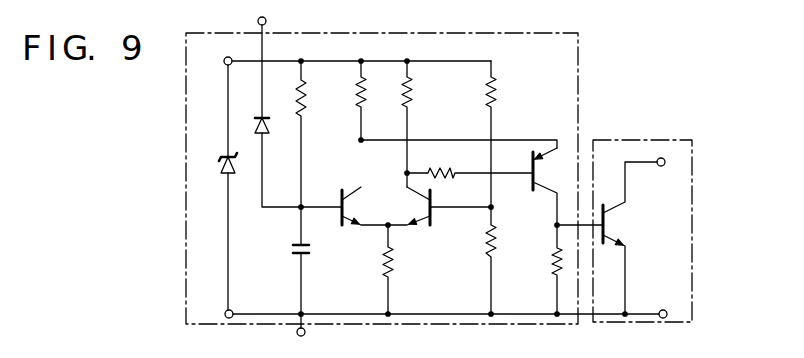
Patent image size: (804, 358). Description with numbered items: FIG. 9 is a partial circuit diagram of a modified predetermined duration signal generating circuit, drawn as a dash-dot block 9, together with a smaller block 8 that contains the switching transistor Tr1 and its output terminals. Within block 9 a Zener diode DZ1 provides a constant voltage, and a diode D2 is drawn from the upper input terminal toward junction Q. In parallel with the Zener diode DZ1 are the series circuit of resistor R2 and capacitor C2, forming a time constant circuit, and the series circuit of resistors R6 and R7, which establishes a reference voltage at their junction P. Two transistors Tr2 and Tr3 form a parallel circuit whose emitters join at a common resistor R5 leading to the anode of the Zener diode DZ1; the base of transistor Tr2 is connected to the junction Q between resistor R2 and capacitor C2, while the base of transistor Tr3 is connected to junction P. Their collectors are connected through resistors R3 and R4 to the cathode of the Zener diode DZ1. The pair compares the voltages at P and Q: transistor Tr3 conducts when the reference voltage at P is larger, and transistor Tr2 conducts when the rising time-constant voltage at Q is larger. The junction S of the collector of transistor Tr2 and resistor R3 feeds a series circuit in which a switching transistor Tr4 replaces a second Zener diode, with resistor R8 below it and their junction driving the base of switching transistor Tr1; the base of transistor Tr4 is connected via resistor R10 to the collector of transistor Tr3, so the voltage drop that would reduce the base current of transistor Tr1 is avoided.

The control circuit block 9 is at (578, 62).
The output transistor block 8 is at (636, 140).
The diode D2 is at (256, 127).
The Zener diode DZ1 is at (219, 166).
The resistor R2 is at (308, 96).
The resistor R3 is at (367, 96).
The resistor R4 is at (414, 96).
The common resistor R5 is at (396, 265).
The resistor R6 is at (498, 96).
The resistor R7 is at (500, 241).
The resistor R8 is at (551, 263).
The resistor R10 is at (440, 177).
The capacitor C2 is at (284, 253).
The switching transistor Tr1 is at (614, 225).
The transistor Tr2 is at (346, 212).
The transistor Tr3 is at (428, 212).
The switching transistor Tr4 is at (538, 174).
The junction Q is at (303, 205).
The junction point S is at (362, 142).
The junction P is at (499, 207).